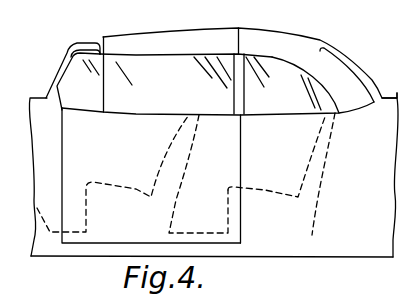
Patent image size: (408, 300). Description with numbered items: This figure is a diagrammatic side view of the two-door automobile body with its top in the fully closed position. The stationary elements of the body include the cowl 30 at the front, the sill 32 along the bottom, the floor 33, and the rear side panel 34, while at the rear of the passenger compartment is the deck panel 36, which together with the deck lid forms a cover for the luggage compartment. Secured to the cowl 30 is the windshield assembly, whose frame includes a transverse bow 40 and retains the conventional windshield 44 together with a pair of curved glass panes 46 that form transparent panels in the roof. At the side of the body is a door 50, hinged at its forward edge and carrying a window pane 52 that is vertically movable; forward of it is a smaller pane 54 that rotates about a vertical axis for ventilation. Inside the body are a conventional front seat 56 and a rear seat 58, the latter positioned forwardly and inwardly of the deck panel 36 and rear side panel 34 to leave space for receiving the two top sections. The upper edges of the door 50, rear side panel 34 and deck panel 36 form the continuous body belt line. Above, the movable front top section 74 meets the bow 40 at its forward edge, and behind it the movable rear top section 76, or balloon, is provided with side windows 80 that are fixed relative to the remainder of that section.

The cowl 30 is at (213, 177).
The sill 32 is at (236, 257).
The floor 33 is at (183, 214).
The rear side panel 34 is at (257, 179).
The deck panel 36 is at (397, 95).
The transverse bow 40 is at (103, 36).
The windshield 44 is at (63, 70).
The curved glass panes 46 is at (86, 42).
The door 50 is at (218, 172).
The window pane 52 is at (180, 84).
The smaller pane 54 is at (90, 74).
The front seat 56 is at (147, 206).
The rear seat 58 is at (270, 191).
The front top section 74 is at (186, 42).
The rear top section 76 is at (300, 43).
The side windows 80 is at (292, 85).